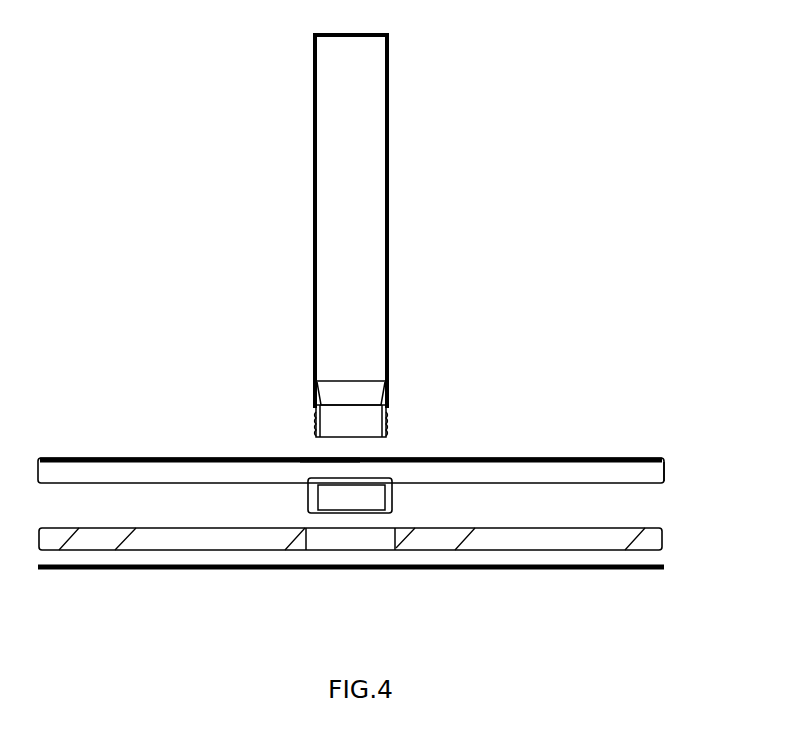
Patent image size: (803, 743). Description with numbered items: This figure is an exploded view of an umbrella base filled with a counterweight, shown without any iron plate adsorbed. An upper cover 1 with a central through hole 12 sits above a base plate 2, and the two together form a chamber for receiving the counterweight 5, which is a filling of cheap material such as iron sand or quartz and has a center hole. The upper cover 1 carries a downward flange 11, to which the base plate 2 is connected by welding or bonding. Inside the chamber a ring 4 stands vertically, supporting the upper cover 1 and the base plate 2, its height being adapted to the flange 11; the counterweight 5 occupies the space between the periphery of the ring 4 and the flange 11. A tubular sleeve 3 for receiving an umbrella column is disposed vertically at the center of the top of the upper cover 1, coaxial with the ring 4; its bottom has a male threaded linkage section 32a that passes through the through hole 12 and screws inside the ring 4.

The upper cover 1 is at (577, 457).
The base plate 2 is at (505, 570).
The sleeve 3 is at (389, 245).
The ring 4 is at (389, 497).
The counterweight 5 is at (650, 538).
The flange 11 is at (665, 472).
The through hole 12 is at (330, 457).
The male threaded linkage section 32a is at (386, 421).